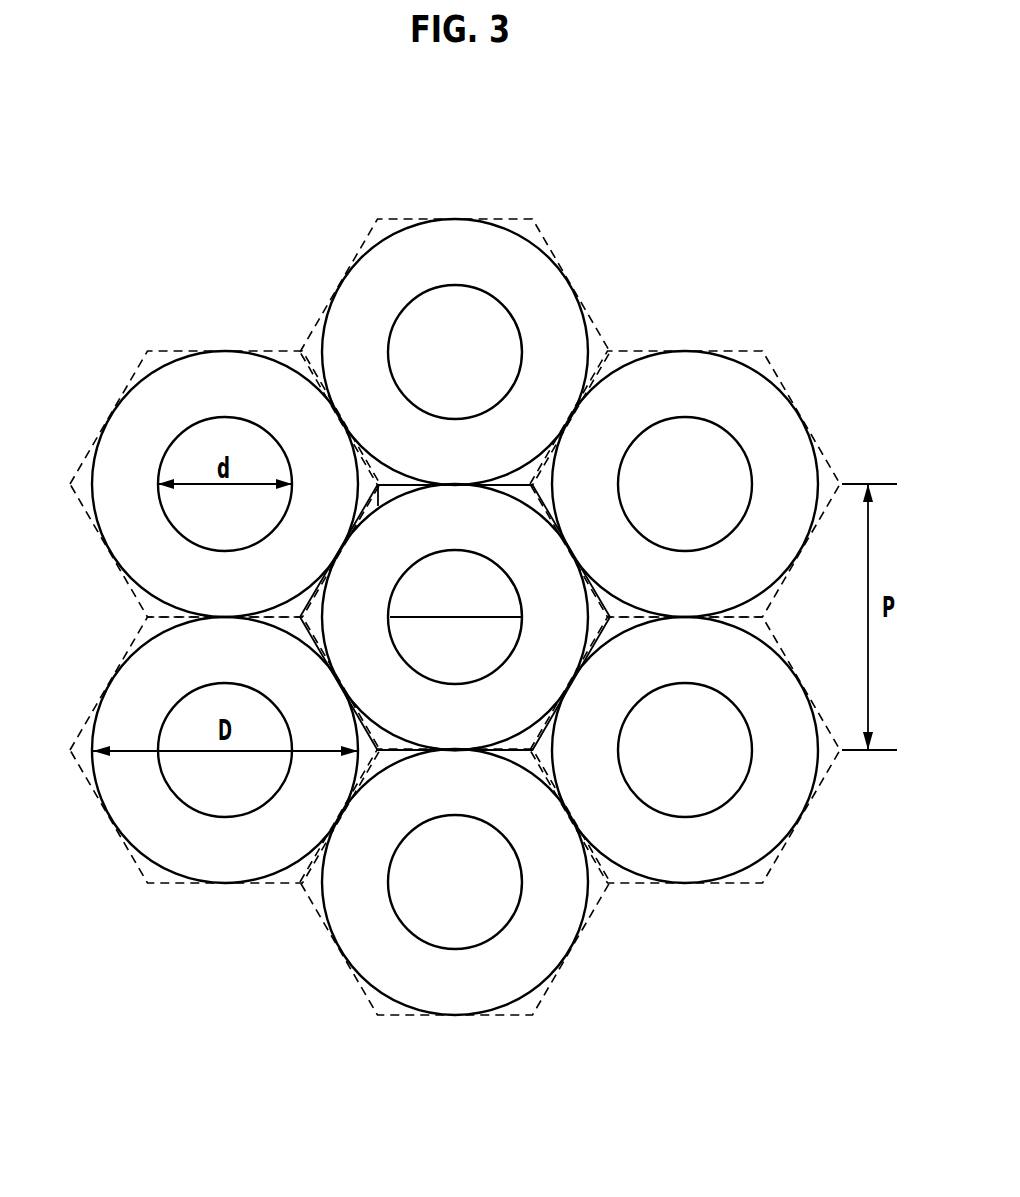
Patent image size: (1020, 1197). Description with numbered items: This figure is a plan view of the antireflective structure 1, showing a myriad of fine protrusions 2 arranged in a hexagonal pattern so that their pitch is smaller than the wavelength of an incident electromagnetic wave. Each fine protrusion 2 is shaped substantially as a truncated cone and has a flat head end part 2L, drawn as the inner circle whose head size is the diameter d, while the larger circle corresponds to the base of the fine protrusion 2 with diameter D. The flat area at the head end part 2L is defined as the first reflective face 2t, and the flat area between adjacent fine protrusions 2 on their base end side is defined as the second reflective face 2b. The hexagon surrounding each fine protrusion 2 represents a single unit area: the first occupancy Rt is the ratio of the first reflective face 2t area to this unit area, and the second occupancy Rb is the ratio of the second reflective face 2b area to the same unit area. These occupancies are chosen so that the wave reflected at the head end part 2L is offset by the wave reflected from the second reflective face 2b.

The antireflective structure 1 is at (675, 162).
The fine protrusion 2 is at (353, 325).
The head end part 2L is at (457, 317).
The first reflective face 2t is at (487, 598).
The second reflective face 2b is at (523, 740).